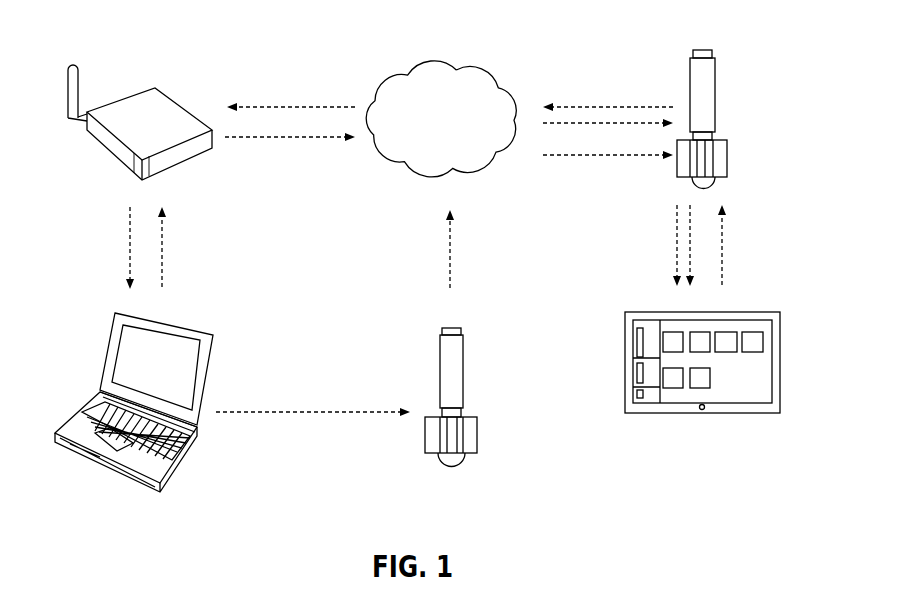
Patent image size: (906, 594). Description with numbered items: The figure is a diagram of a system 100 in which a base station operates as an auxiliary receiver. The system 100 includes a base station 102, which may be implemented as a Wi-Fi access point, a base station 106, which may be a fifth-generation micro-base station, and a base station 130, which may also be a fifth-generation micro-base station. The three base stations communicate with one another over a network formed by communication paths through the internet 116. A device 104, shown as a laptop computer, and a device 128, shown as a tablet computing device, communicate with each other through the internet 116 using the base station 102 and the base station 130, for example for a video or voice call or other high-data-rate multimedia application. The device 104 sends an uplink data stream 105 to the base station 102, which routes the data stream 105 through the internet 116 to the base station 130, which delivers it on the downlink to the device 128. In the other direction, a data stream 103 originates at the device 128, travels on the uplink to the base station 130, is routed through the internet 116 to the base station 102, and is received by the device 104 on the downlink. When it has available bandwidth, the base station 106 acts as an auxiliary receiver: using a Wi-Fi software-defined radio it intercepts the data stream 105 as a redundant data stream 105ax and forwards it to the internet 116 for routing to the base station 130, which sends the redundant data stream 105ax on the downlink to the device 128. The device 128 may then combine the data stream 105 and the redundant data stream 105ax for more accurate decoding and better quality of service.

The system 100 is at (270, 38).
The base station 102 is at (153, 88).
The data stream 103 is at (258, 107).
The device 104 is at (80, 413).
The uplink data stream 105 is at (298, 137).
The redundant data stream 105ax is at (610, 157).
The base station 106 is at (463, 372).
The internet 116 is at (475, 65).
The device 128 is at (740, 413).
The base station 130 is at (715, 95).